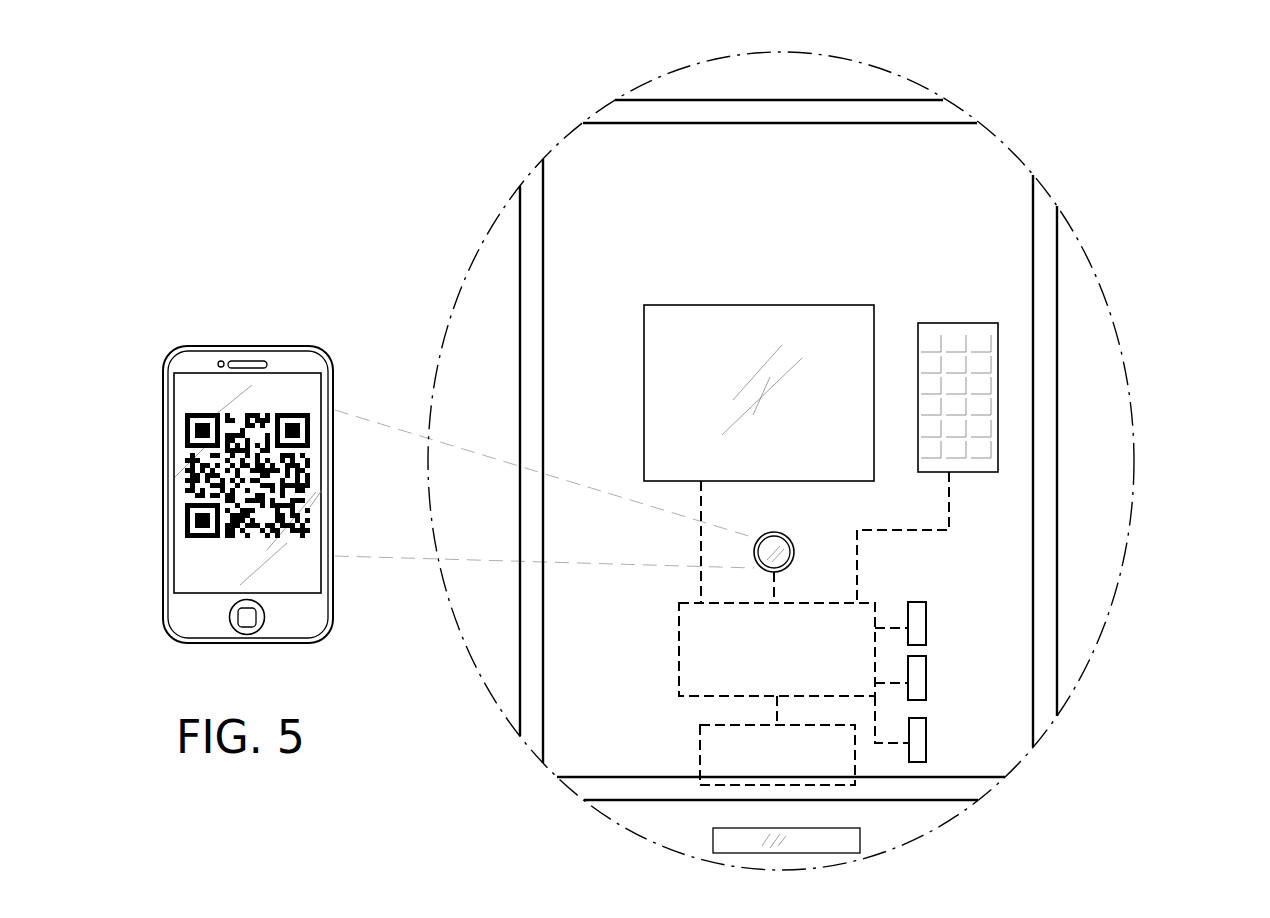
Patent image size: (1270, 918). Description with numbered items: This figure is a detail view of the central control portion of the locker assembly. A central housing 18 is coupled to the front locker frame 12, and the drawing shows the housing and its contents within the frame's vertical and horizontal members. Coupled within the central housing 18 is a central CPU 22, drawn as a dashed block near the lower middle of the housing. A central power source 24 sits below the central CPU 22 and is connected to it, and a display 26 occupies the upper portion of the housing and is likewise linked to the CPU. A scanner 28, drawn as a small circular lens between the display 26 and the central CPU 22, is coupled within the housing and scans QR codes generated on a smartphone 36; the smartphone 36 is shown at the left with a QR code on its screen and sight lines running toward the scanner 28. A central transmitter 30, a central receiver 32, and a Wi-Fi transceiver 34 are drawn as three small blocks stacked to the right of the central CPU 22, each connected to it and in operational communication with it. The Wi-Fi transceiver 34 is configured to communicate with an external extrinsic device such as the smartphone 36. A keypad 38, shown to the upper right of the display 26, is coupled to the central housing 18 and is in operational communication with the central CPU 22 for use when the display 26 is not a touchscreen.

The front locker frame 12 is at (1048, 333).
The central housing 18 is at (983, 260).
The central CPU 22 is at (693, 683).
The central power source 24 is at (713, 750).
The display 26 is at (707, 318).
The scanner 28 is at (783, 554).
The central transmitter 30 is at (920, 615).
The central receiver 32 is at (915, 668).
The Wi-Fi transceiver 34 is at (918, 733).
The smartphone 36 is at (177, 398).
The keypad 38 is at (980, 447).